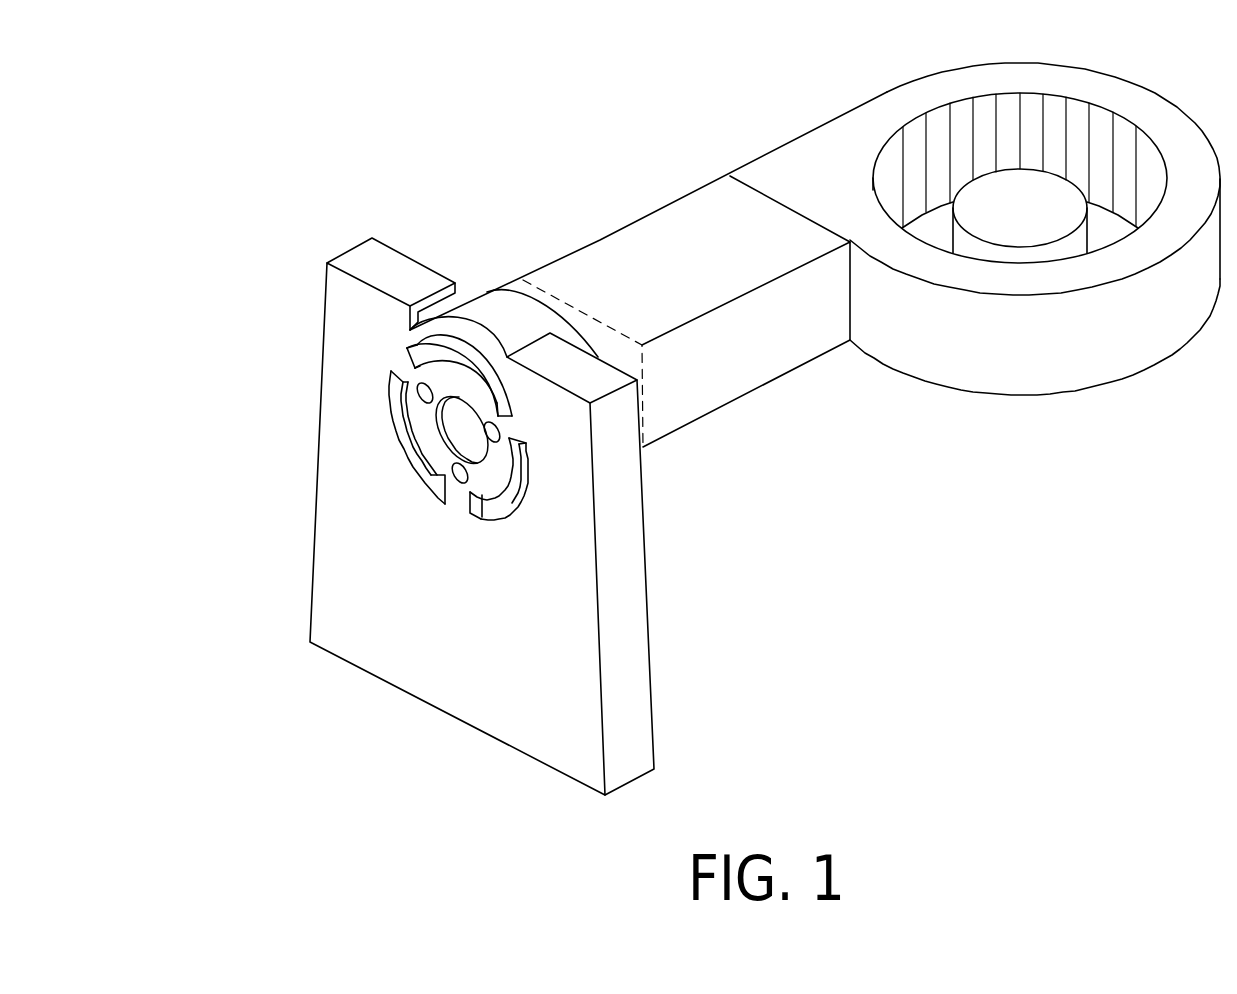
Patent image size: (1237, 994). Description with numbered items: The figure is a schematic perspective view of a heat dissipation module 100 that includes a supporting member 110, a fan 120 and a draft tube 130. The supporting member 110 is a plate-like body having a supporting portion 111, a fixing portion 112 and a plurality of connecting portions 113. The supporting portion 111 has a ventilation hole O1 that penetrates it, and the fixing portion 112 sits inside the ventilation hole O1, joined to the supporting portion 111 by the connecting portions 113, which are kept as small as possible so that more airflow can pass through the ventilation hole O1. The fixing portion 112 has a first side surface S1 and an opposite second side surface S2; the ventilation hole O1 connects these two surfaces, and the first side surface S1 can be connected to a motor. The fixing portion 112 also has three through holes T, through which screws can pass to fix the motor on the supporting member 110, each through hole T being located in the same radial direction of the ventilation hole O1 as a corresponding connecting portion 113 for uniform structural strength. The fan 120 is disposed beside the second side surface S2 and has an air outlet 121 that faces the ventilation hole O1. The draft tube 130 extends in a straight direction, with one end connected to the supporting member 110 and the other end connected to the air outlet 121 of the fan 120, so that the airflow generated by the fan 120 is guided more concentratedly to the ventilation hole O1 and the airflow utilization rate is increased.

The heat dissipation module 100 is at (245, 85).
The supporting member 110 is at (322, 368).
The supporting portion 111 is at (333, 578).
The fixing portion 112 is at (432, 448).
The connecting portions 113 is at (527, 505).
The through holes T is at (417, 382).
The ventilation hole O1 is at (528, 510).
The first side surface S1 is at (455, 385).
The second side surface S2 is at (481, 368).
The fan 120 is at (1123, 335).
The air outlet 121 is at (770, 177).
The draft tube 130 is at (742, 363).